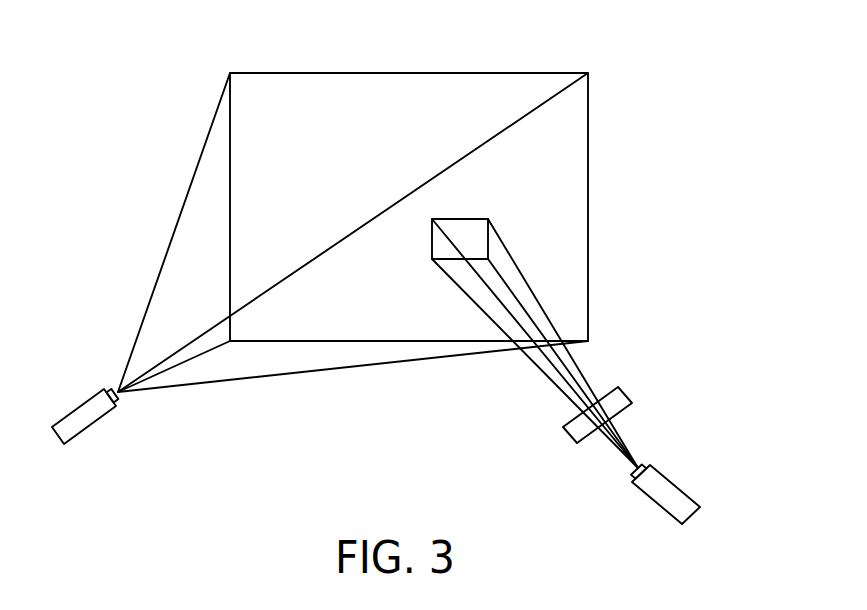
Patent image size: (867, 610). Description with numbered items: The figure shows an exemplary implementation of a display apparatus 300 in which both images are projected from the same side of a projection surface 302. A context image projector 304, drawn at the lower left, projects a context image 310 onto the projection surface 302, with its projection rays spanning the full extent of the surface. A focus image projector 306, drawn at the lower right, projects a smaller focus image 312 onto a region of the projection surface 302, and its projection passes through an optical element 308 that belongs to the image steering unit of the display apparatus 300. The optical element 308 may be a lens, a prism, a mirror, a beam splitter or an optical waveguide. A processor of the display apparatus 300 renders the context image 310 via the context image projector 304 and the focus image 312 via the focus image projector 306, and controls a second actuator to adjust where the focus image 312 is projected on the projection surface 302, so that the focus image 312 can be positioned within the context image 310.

The display apparatus 300 is at (656, 38).
The projection surface 302 is at (588, 153).
The context image projector 304 is at (83, 405).
The focus image projector 306 is at (668, 478).
The optical element 308 is at (627, 395).
The context image 310 is at (427, 140).
The focus image 312 is at (468, 219).